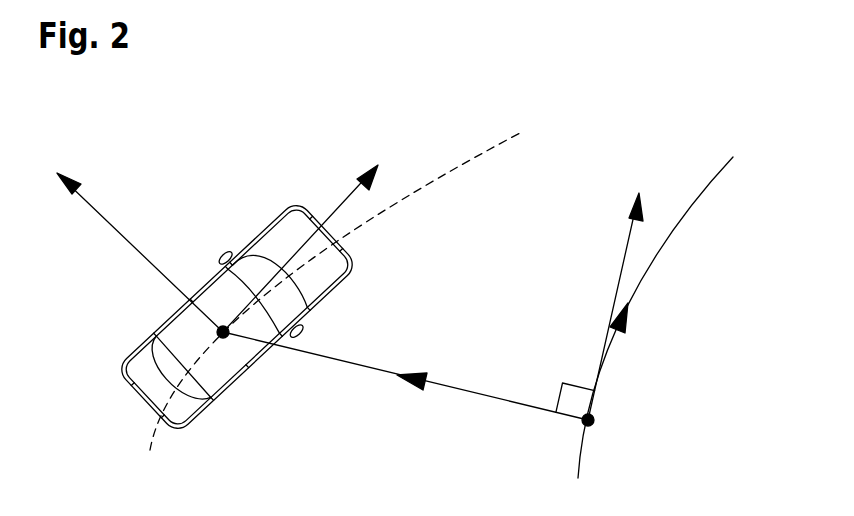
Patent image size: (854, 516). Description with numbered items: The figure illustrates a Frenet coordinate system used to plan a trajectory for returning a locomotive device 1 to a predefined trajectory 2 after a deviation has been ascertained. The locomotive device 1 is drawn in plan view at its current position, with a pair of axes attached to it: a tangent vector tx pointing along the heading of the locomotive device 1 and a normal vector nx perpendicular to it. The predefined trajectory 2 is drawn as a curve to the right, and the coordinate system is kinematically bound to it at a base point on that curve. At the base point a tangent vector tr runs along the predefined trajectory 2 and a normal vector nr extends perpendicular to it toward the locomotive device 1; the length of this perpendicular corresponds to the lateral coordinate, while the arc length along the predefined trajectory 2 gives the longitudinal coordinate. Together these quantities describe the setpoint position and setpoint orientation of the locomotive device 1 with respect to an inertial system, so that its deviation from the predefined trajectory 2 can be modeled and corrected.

The locomotive device 1 is at (265, 240).
The predefined trajectory 2 is at (668, 235).
The vehicle normal vector nx is at (140, 252).
The vehicle tangent vector tx is at (300, 248).
The reference path normal vector nr is at (547, 390).
The reference path tangent vector tr is at (615, 306).